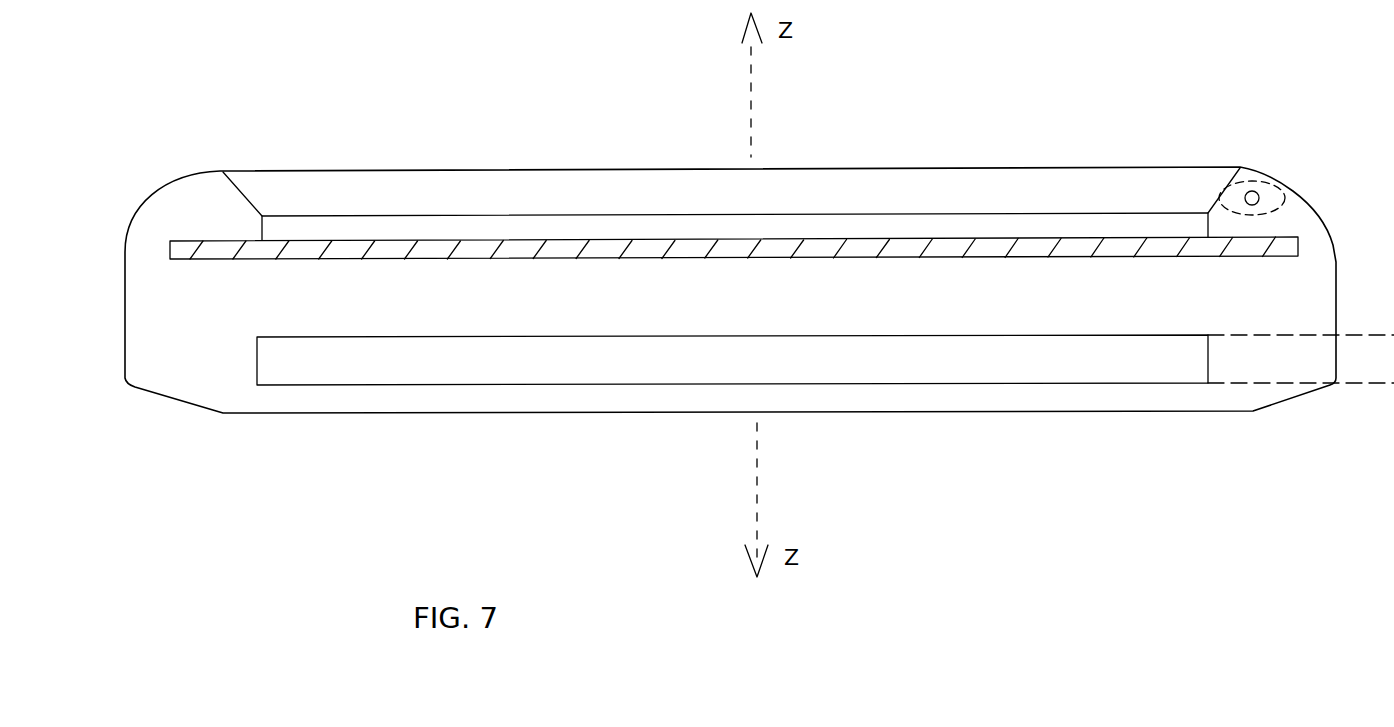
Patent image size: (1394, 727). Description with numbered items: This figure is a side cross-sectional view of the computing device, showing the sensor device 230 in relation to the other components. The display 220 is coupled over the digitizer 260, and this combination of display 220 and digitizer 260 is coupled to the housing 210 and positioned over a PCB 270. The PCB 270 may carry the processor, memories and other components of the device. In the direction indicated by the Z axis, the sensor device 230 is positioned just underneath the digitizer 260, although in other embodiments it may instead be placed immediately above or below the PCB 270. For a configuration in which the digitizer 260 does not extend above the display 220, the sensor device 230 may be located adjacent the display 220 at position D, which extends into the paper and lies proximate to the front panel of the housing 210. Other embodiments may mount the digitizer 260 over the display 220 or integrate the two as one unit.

The housing 210 is at (330, 405).
The display 220 is at (985, 186).
The sensor device 230 is at (388, 245).
The digitizer 260 is at (837, 222).
The PCB 270 is at (957, 365).
The position D is at (1282, 190).